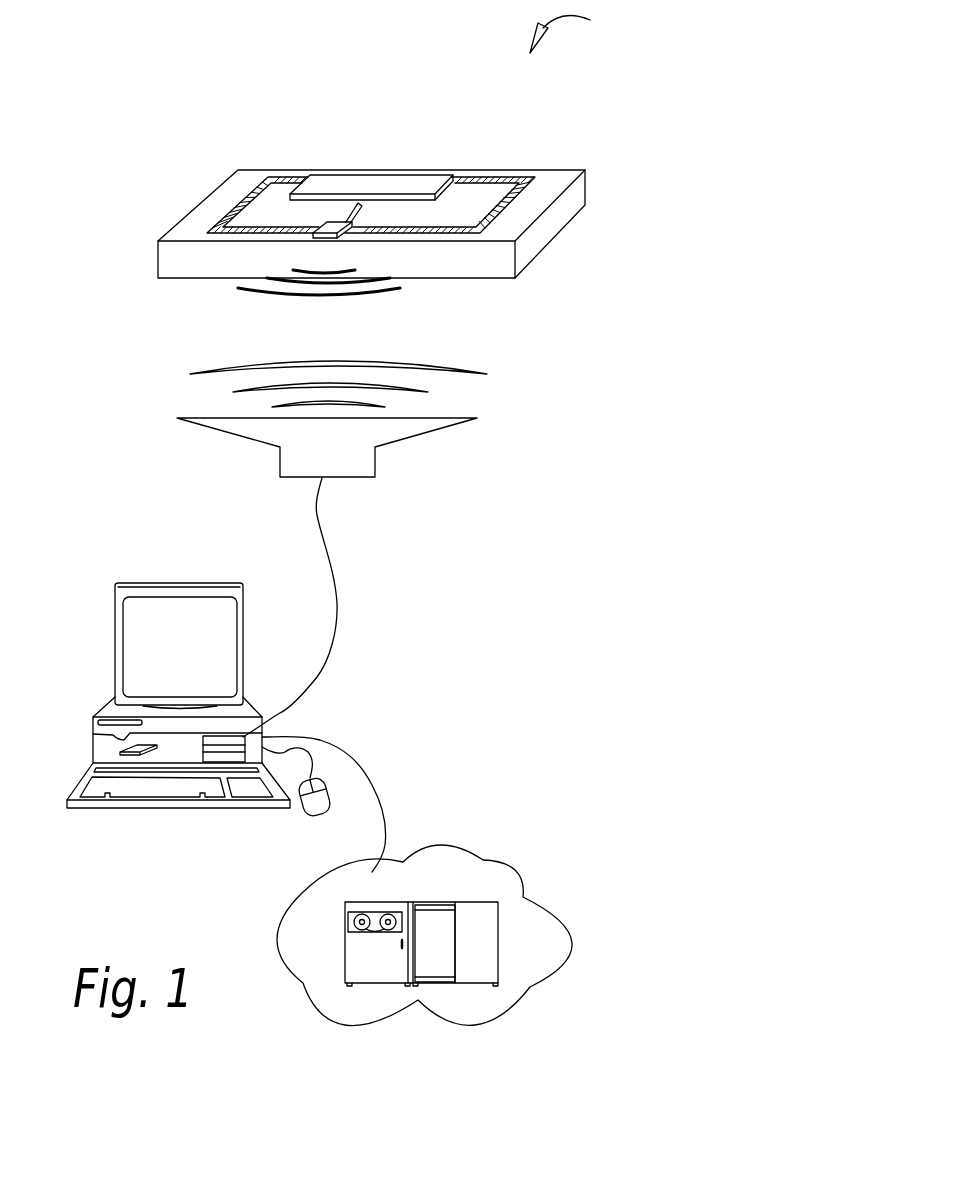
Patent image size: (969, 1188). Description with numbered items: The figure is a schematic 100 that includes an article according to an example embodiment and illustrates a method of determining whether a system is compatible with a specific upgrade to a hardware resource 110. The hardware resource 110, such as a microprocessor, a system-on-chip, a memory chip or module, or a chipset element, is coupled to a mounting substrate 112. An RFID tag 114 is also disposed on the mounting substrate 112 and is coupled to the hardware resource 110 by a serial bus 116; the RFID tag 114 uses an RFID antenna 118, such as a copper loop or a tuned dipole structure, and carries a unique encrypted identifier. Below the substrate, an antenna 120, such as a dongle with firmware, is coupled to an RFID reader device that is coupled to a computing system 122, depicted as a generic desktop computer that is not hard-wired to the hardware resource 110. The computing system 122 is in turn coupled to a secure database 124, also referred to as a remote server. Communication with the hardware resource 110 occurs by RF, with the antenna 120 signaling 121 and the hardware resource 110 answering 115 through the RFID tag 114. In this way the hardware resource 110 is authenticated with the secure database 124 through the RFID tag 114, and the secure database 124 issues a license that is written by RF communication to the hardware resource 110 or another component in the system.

The schematic 100 is at (593, 28).
The hardware resource 110 is at (382, 180).
The mounting substrate 112 is at (585, 193).
The RFID tag 114 is at (325, 228).
The answering 115 is at (257, 291).
The serial bus 116 is at (345, 220).
The RFID antenna 118 is at (508, 177).
The antenna 120 is at (387, 427).
The signaling 121 is at (447, 368).
The computing system 122 is at (130, 640).
The secure database 124 is at (540, 923).